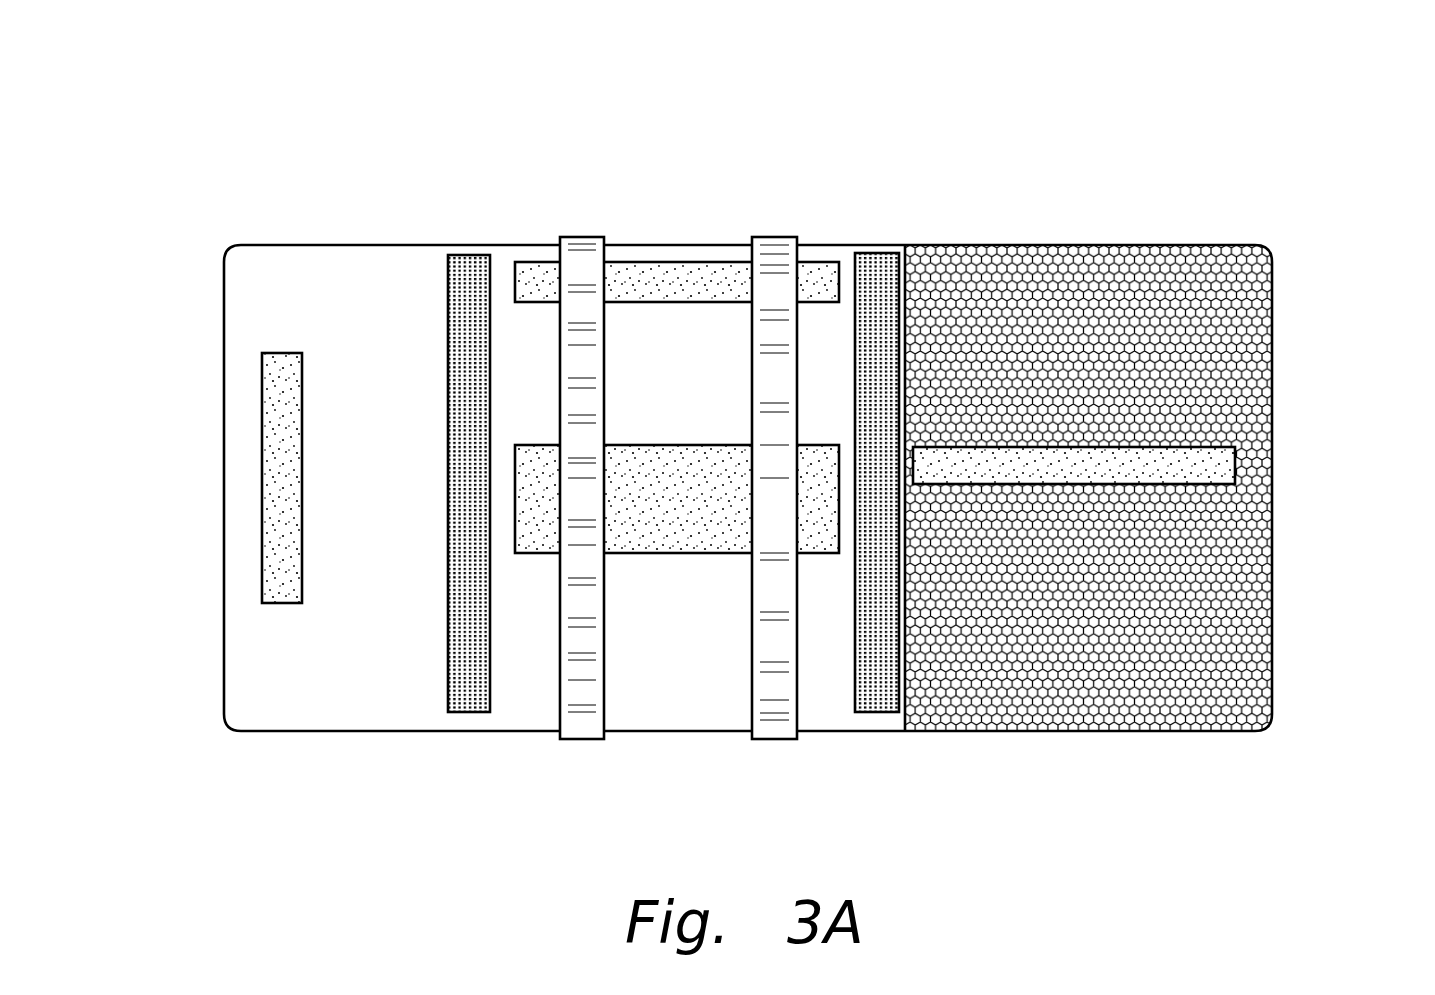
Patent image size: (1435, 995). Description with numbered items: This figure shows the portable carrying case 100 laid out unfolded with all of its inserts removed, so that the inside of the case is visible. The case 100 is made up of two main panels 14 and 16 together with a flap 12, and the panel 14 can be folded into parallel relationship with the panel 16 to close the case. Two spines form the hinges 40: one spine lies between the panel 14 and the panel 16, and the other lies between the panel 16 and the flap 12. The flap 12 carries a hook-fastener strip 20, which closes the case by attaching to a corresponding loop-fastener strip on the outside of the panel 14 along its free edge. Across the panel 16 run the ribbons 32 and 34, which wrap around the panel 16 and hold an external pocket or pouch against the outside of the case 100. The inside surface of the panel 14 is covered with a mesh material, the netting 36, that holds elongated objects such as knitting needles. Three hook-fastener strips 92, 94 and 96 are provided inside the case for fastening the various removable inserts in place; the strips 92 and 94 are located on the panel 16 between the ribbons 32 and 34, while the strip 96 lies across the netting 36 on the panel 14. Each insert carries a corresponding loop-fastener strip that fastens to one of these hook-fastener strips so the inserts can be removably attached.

The carrying case 100 is at (775, 451).
The flap 12 is at (338, 733).
The panel 14 is at (1127, 518).
The panel 16 is at (678, 733).
The hook-fastener strip 20 is at (262, 375).
The ribbon 32 is at (771, 727).
The ribbon 34 is at (569, 738).
The netting 36 is at (1246, 595).
The hinges 40 is at (472, 712).
The hook-fastener strip 92 is at (540, 262).
The hook-fastener strip 94 is at (622, 445).
The hook-fastener strip 96 is at (1240, 474).